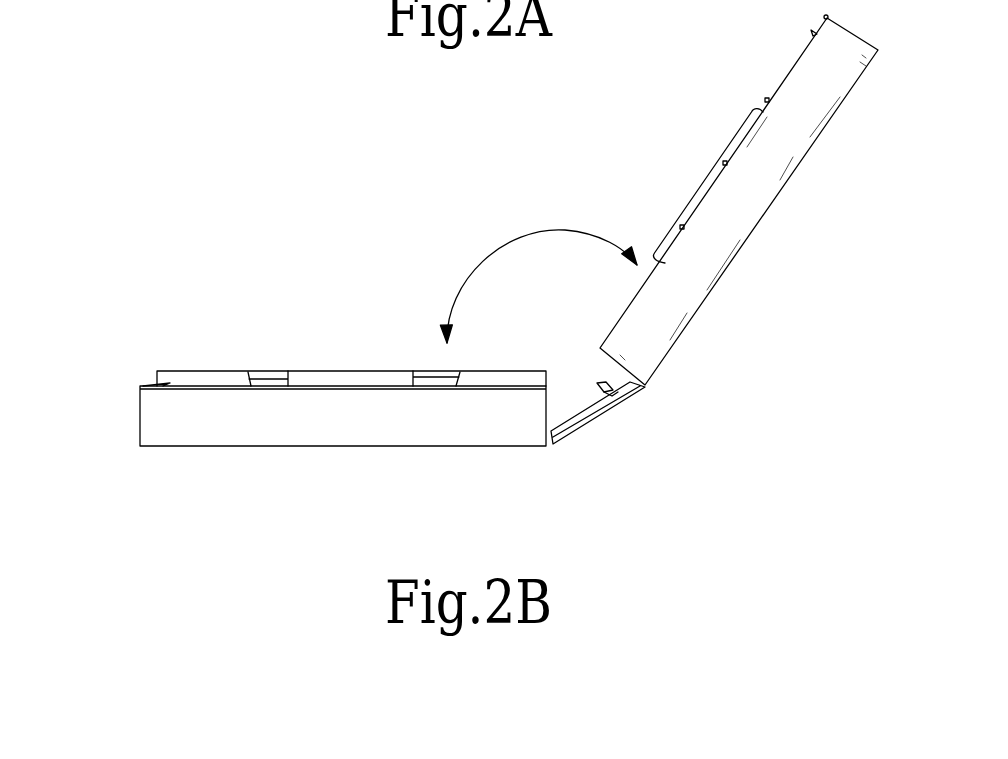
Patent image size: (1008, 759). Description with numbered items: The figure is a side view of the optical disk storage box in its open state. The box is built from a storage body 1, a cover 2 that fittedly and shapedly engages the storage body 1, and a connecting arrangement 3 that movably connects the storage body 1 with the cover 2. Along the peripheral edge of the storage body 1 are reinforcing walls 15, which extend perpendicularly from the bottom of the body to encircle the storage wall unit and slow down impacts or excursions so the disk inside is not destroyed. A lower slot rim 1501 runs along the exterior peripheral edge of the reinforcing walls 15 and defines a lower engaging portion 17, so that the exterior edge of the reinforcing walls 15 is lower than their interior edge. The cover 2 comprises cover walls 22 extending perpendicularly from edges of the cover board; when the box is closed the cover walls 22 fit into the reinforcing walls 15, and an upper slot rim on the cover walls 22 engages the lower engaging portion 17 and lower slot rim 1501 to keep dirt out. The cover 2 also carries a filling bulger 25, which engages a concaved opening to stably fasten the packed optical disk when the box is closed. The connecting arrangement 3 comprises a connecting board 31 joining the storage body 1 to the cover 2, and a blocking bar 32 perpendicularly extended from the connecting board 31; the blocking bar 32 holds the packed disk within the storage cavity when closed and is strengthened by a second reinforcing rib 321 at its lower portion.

The storage body 1 is at (302, 504).
The reinforcing wall 15 is at (180, 432).
The lower engaging portion 17 is at (208, 388).
The lower slot rim 1501 is at (354, 437).
The cover 2 is at (739, 254).
The cover wall 22 is at (697, 283).
The filling bulger 25 is at (705, 183).
The connecting arrangement 3 is at (640, 467).
The connecting board 31 is at (577, 423).
The blocking bar 32 is at (598, 387).
The second reinforcing rib 321 is at (625, 400).